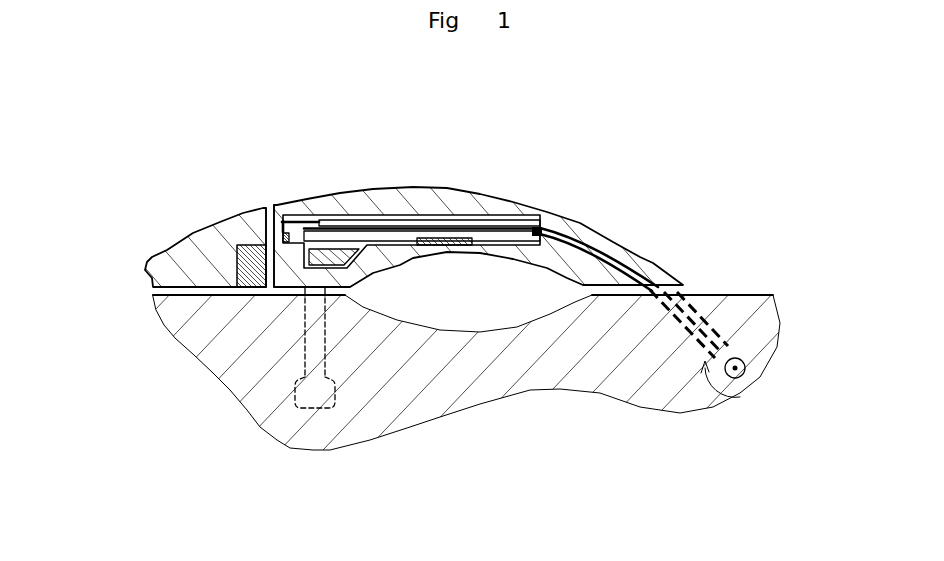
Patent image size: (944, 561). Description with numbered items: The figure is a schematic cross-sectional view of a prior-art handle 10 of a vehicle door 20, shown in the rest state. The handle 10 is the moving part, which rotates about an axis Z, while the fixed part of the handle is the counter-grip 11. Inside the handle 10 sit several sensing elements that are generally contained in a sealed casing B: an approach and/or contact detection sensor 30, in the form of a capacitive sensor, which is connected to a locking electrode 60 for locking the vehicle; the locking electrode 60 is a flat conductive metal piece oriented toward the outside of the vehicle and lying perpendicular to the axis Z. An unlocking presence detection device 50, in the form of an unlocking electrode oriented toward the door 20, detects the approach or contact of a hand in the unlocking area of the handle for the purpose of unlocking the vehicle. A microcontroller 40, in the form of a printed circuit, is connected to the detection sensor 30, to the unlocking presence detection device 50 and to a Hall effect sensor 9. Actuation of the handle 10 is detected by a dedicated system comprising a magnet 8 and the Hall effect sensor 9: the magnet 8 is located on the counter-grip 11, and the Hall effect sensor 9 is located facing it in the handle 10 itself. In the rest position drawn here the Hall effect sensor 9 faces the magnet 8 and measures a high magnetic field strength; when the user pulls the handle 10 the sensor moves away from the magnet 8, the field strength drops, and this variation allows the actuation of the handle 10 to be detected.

The magnet 8 is at (250, 263).
The Hall effect sensor 9 is at (283, 221).
The handle 10 is at (510, 204).
The counter-grip 11 is at (198, 233).
The vehicle door 20 is at (722, 295).
The approach and/or contact detection sensor 30 is at (347, 221).
The microcontroller 40 is at (431, 231).
The unlocking presence detection device 50 is at (435, 246).
The locking electrode 60 is at (338, 262).
The sealed casing B is at (541, 227).
The axis Z is at (734, 367).